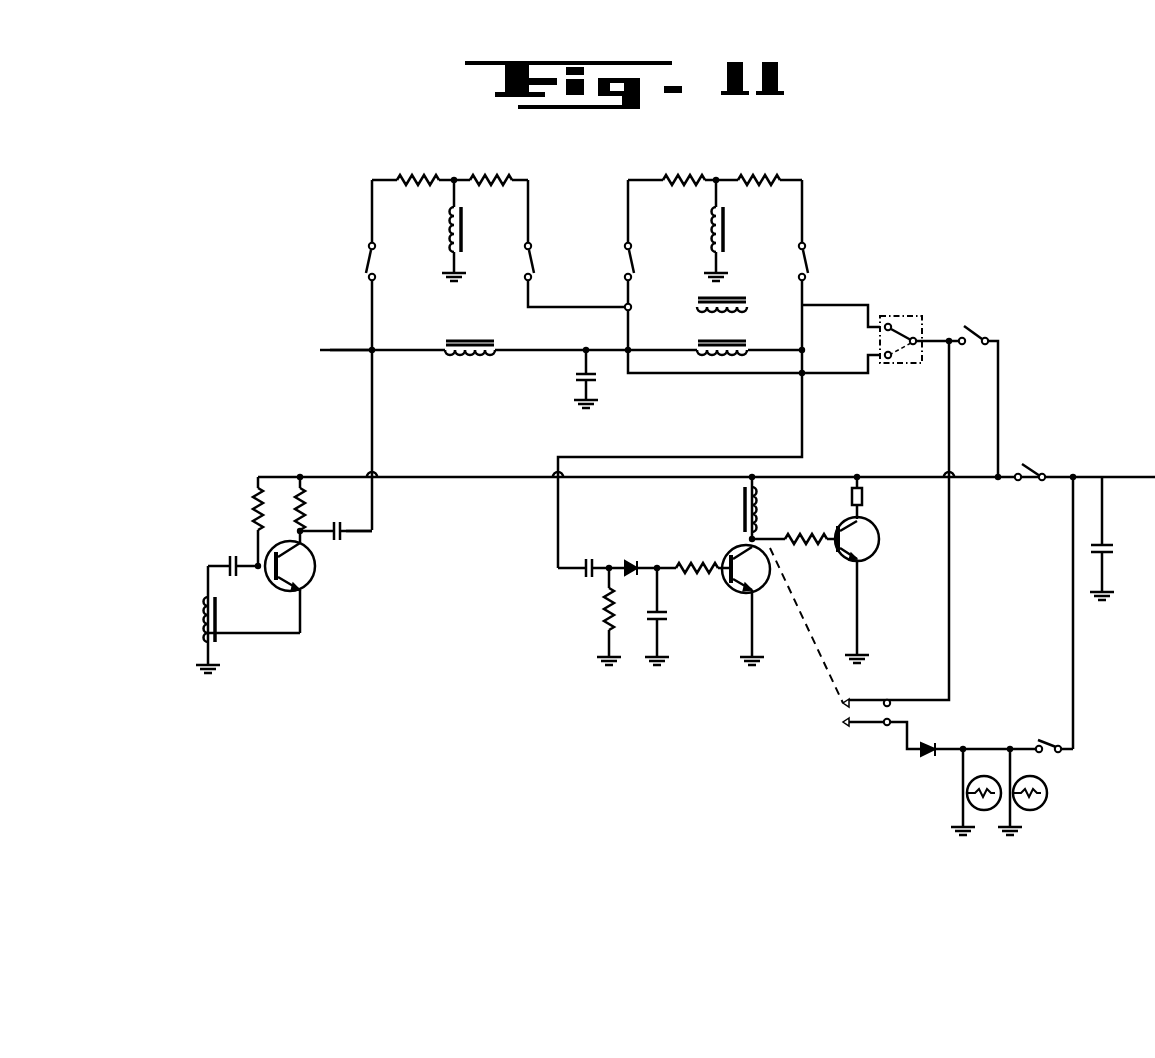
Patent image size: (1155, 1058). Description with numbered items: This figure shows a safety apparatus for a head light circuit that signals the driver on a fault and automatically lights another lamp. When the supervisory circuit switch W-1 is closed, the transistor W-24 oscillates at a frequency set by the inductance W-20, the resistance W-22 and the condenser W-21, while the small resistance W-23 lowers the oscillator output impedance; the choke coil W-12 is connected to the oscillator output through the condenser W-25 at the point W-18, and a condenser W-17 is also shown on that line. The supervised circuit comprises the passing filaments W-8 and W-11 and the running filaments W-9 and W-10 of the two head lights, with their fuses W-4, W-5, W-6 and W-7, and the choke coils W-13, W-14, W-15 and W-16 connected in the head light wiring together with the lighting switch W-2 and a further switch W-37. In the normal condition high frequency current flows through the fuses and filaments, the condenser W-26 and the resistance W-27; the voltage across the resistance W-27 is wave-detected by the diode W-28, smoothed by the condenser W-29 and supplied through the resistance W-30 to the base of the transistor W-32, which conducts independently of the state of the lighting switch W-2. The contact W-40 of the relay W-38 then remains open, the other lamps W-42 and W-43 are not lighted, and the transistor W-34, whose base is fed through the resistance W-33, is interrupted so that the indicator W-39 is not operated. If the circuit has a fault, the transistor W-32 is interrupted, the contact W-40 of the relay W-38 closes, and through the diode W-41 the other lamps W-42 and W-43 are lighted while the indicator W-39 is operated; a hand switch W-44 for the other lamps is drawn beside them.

The supervisory circuit switch 1 is at (1022, 474).
The lighting switch 2 is at (967, 334).
The fuse 4 is at (367, 262).
The fuse 5 is at (531, 263).
The fuse 6 is at (632, 263).
The fuse 7 is at (806, 263).
The passing filament 8 is at (408, 178).
The running filament 9 is at (488, 178).
The running filament 10 is at (681, 178).
The passing filament 11 is at (761, 178).
The choke coil 12 is at (451, 239).
The choke coil 13 is at (714, 237).
The choke coil 14 is at (727, 302).
The choke coil 15 is at (452, 338).
The choke coil 16 is at (704, 344).
The capacitor 17 is at (575, 377).
The point 18 is at (332, 350).
The inductance 20 is at (205, 618).
The condenser 21 is at (230, 554).
The resistance 22 is at (254, 500).
The resistance 23 is at (330, 512).
The transistor 24 is at (312, 586).
The condenser 25 is at (340, 544).
The condenser 26 is at (590, 558).
The resistance 27 is at (605, 600).
The diode 28 is at (630, 558).
The condenser 29 is at (652, 614).
The resistance 30 is at (699, 573).
The transistor 32 is at (740, 603).
The resistor 33 is at (802, 536).
The transistor 34 is at (870, 556).
The switch 37 is at (905, 316).
The relay 38 is at (758, 509).
The indicator 39 is at (864, 499).
The contact 40 is at (830, 641).
The diode 41 is at (932, 746).
The other lamp 42 is at (966, 793).
The other lamp 43 is at (1047, 793).
The switch 44 is at (1041, 738).